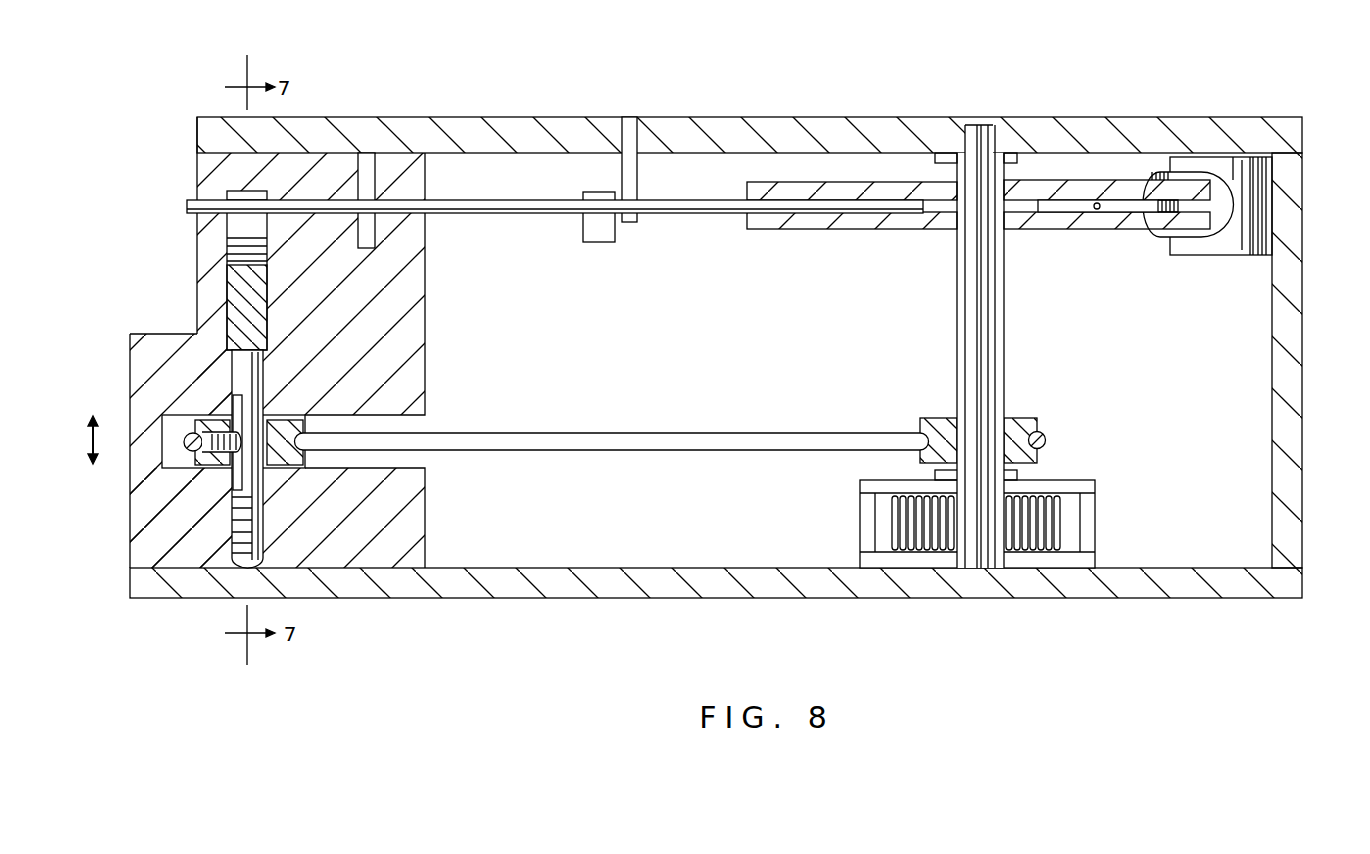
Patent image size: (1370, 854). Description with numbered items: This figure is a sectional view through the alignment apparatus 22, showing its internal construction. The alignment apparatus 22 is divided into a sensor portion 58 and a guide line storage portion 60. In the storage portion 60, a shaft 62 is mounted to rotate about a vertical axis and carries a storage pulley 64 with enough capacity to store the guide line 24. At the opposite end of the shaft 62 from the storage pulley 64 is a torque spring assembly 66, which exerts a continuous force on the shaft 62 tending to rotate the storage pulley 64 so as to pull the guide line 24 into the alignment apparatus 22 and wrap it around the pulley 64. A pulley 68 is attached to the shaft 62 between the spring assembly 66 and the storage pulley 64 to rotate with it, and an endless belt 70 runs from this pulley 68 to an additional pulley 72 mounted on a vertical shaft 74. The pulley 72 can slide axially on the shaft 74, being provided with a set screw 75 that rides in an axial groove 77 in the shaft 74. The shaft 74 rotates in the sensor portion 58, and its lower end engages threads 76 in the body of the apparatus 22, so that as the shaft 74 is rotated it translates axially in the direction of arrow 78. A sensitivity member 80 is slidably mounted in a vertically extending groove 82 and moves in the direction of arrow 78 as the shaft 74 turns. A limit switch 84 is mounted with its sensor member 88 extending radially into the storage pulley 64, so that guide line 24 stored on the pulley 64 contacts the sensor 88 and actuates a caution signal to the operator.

The alignment apparatus 22 is at (534, 110).
The guide line 24 is at (522, 214).
The sensor portion 58 is at (388, 158).
The guide line storage portion 60 is at (1036, 163).
The shaft 62 is at (990, 291).
The storage pulley 64 is at (1043, 190).
The torque spring assembly 66 is at (1085, 487).
The pulley 68 is at (1020, 418).
The endless belt 70 is at (718, 433).
The pulley 72 is at (280, 453).
The shaft 74 is at (228, 348).
The set screw 75 is at (207, 454).
The threads 76 is at (240, 533).
The axial groove 77 is at (228, 476).
The arrow 78 is at (90, 438).
The sensitivity member 80 is at (232, 274).
The groove 82 is at (238, 226).
The limit switch 84 is at (1197, 238).
The sensor member 88 is at (1125, 212).